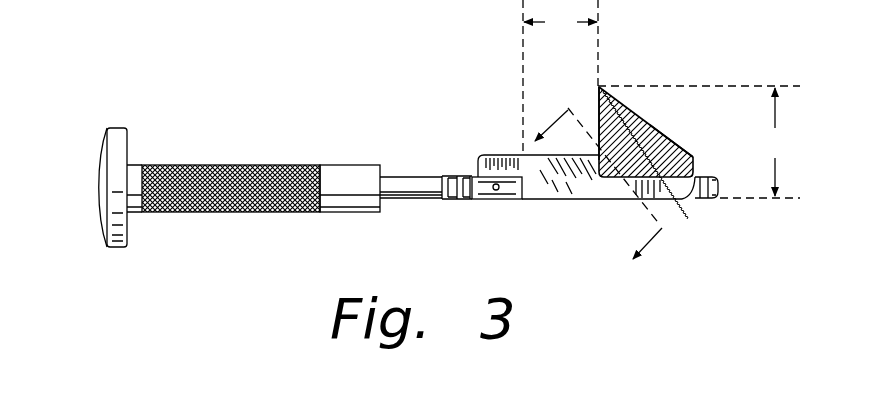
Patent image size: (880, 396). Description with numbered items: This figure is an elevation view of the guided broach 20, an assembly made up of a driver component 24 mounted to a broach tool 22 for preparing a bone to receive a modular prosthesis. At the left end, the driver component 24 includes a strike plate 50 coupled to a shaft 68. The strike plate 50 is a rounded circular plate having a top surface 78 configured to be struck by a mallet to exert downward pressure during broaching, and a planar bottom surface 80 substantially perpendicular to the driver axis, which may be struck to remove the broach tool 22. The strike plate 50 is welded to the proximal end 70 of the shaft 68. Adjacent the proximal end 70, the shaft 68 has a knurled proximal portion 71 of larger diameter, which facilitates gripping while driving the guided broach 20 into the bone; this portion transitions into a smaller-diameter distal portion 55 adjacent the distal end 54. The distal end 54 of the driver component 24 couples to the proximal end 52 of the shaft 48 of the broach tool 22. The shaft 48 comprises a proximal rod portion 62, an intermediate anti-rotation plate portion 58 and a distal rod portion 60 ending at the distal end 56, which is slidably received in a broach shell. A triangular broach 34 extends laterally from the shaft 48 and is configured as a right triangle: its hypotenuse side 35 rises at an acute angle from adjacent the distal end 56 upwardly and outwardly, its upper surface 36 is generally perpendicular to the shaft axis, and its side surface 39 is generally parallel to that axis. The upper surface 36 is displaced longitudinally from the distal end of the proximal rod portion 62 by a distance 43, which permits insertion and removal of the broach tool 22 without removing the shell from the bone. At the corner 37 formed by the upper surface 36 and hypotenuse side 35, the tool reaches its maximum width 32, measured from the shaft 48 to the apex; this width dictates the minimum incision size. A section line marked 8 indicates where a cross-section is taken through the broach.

The guided broach 20 is at (310, 82).
The top surface 78 is at (98, 162).
The planar bottom surface 80 is at (128, 142).
The strike plate 50 is at (113, 203).
The proximal end 70 is at (132, 212).
The proximal portion 71 is at (229, 164).
The driver component 24 is at (320, 165).
The distal portion 55 is at (419, 177).
The shaft 68 is at (405, 198).
The distal end 54 is at (472, 176).
The proximal end 52 is at (472, 200).
The broach tool 22 is at (510, 199).
The proximal rod portion 62 is at (497, 192).
The shaft 48 is at (604, 199).
The intermediate anti-rotation plate portion 58 is at (555, 194).
The side surface 39 is at (690, 197).
The upper surface 36 is at (598, 100).
The corner 37 is at (600, 85).
The hypotenuse side 35 is at (622, 98).
The triangular broach 34 is at (673, 142).
The distal rod portion 60 is at (710, 177).
The distal end 56 is at (720, 196).
The section line 8- 8 is at (607, 172).
The distance 43 is at (560, 77).
The maximum width 32 is at (699, 142).